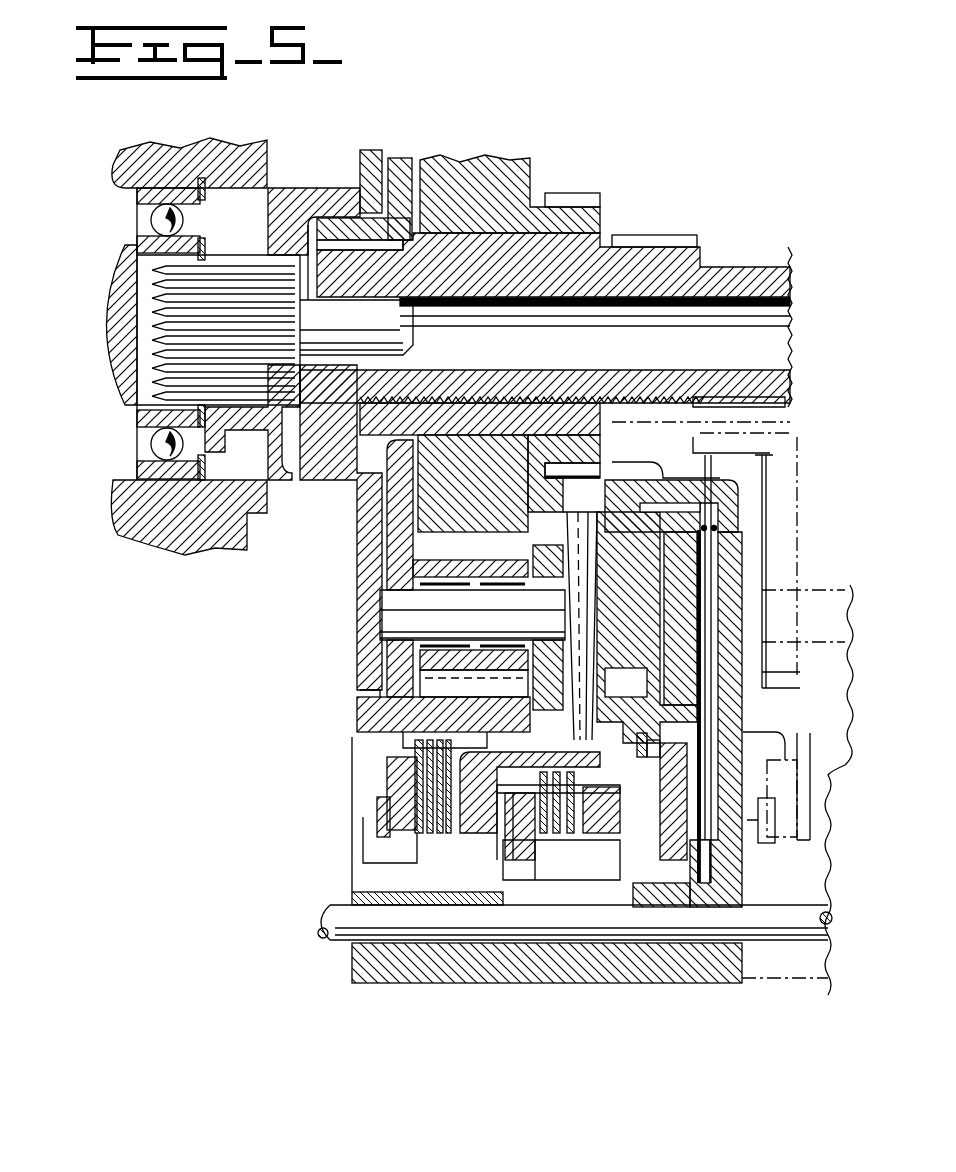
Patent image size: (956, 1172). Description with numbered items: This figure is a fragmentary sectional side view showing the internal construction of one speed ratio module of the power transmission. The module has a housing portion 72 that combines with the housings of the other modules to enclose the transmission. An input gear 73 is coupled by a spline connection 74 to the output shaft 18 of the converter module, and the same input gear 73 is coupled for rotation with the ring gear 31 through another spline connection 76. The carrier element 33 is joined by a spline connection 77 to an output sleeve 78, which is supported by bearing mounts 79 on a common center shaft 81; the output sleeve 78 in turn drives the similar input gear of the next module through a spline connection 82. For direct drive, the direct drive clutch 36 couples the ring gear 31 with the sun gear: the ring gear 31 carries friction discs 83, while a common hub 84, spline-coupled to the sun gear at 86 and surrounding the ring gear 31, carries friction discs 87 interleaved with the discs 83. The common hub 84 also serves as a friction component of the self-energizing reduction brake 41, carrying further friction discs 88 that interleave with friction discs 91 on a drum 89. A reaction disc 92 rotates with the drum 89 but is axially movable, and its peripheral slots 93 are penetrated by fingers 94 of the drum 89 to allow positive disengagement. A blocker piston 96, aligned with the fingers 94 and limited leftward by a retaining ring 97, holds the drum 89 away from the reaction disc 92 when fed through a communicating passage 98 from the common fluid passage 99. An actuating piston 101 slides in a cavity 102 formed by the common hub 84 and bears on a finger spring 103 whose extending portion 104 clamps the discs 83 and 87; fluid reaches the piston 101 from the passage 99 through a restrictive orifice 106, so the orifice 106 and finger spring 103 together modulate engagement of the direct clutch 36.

The output shaft 18 is at (122, 402).
The ring gear 31 is at (478, 733).
The carrier element 33 is at (380, 549).
The direct drive clutch 36 is at (395, 778).
The reduction brake 41 is at (564, 940).
The housing portion 72 is at (413, 976).
The input gear 73 is at (290, 473).
The spline connection 74 is at (222, 432).
The spline connection 76 is at (357, 706).
The spline connection 77 is at (395, 432).
The output sleeve 78 is at (535, 372).
The bearing mounts 79 is at (347, 262).
The common center shaft 81 is at (455, 372).
The spline connection 82 is at (633, 413).
The friction discs 83 is at (445, 740).
The common hub 84 is at (630, 627).
The spline connection 86 is at (526, 503).
The friction discs 87 is at (428, 838).
The friction discs 88 is at (540, 787).
The drum 89 is at (537, 906).
The friction discs 91 is at (548, 840).
The reaction disc 92 is at (605, 870).
The axially extending slots 93 is at (680, 865).
The axially extending fingers 94 is at (603, 860).
The blocker piston 96 is at (745, 885).
The retaining ring 97 is at (700, 752).
The communicating passage 98 is at (740, 720).
The common fluid passage 99 is at (722, 530).
The actuating piston 101 is at (662, 612).
The cavity 102 is at (700, 393).
The finger spring 103 is at (480, 762).
The extending portion 104 is at (448, 838).
The restrictive orifice 106 is at (763, 455).